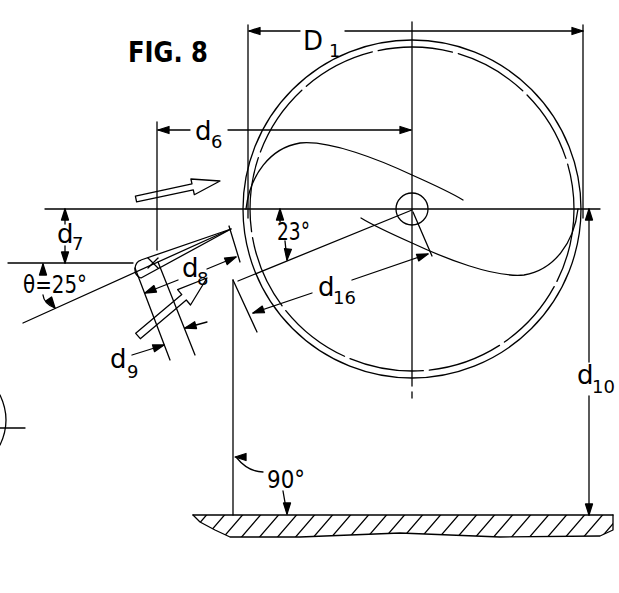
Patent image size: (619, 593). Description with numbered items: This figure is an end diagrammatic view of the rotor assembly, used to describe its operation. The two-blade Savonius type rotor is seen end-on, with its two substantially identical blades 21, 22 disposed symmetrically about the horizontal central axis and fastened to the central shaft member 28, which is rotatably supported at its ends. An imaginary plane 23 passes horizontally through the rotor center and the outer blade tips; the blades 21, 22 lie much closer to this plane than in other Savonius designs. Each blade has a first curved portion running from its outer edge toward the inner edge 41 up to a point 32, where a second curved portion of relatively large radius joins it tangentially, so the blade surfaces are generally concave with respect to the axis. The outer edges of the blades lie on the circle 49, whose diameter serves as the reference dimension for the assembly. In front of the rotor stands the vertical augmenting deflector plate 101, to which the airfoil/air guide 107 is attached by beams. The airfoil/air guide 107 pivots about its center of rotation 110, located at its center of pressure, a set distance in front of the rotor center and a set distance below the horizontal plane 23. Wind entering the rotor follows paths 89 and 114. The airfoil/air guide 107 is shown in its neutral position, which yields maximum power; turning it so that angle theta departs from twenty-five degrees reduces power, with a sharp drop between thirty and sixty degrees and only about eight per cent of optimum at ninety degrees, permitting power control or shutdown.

The blade 21 is at (412, 220).
The blade 22 is at (490, 278).
The imaginary plane 23 is at (528, 209).
The central shaft member 28 is at (400, 197).
The point 32 is at (412, 211).
The inner edge 41 is at (362, 217).
The circle 49 is at (457, 371).
The wind path 89 is at (138, 334).
The vertical deflector plate 101 is at (230, 403).
The airfoil/air guide 107 is at (170, 248).
The center of rotation 110 is at (152, 262).
The wind path 114 is at (138, 197).